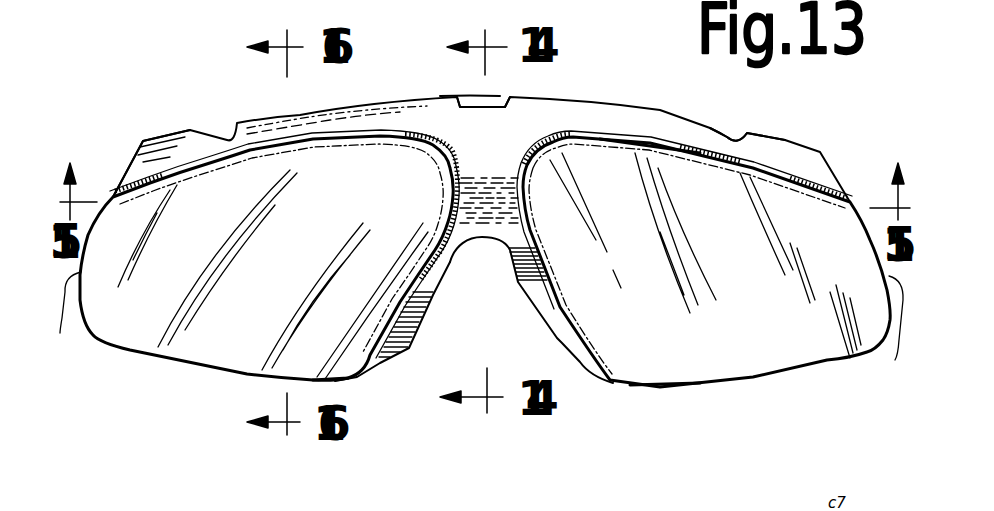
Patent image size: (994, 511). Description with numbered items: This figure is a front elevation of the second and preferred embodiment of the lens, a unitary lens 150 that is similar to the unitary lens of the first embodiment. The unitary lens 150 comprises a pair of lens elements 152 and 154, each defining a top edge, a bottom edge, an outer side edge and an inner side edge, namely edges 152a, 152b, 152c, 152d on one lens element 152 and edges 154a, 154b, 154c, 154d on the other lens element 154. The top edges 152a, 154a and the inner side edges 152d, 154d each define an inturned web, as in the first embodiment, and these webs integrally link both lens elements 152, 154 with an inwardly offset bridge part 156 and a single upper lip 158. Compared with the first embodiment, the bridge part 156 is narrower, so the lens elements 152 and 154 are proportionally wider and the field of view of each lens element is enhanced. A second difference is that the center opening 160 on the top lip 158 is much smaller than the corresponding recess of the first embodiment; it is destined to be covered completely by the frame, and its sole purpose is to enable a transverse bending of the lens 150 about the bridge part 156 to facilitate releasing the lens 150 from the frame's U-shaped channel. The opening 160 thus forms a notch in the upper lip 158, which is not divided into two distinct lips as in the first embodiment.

The unitary lens 150 is at (134, 352).
The lens element 152 is at (213, 337).
The top edge of lens element 152 152a is at (192, 167).
The bottom edge of lens element 152 152b is at (333, 388).
The outer side edge of lens element 152 152c is at (71, 319).
The inner side edge of lens element 152 152d is at (412, 296).
The lens element 154 is at (750, 341).
The top edge of lens element 154 154a is at (657, 143).
The bottom edge of lens element 154 154b is at (657, 390).
The outer side edge of lens element 154 154c is at (895, 360).
The inner side edge of lens element 154 154d is at (520, 265).
The bridge part 156 is at (487, 157).
The upper lip 158 is at (712, 138).
The center opening 160 is at (493, 100).